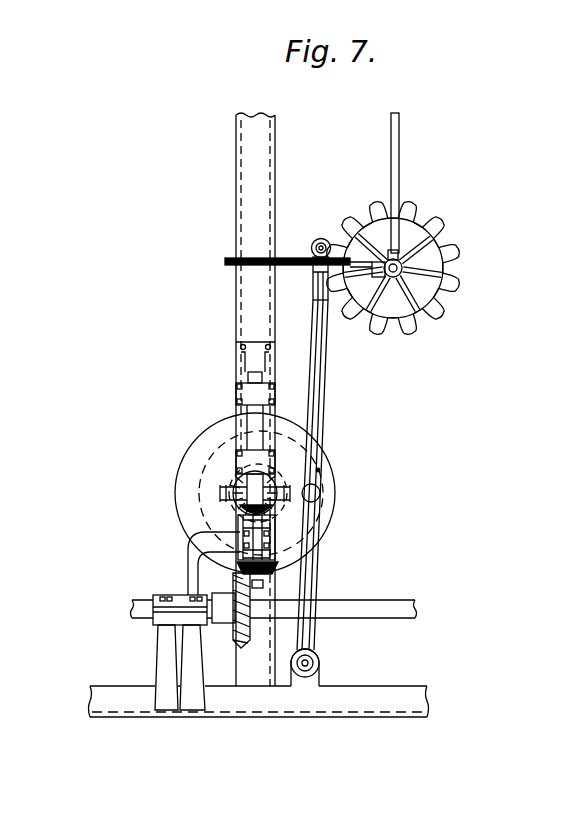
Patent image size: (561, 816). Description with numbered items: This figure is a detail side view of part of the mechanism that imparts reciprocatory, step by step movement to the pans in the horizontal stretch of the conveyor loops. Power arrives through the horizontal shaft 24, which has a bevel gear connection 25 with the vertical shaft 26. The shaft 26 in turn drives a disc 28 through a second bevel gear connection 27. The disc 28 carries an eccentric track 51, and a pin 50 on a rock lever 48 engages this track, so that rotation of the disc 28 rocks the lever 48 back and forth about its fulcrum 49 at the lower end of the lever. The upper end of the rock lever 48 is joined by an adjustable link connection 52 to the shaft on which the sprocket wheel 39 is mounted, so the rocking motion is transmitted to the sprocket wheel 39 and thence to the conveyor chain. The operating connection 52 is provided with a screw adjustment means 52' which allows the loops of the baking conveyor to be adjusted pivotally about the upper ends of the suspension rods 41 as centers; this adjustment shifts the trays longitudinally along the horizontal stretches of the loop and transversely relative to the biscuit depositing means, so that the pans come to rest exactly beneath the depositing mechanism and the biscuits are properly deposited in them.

The horizontal shaft 24 is at (372, 600).
The bevel gear connection 25 is at (236, 577).
The shaft 26 is at (270, 483).
The bevel gear connection 27 is at (238, 509).
The disc 28 is at (332, 514).
The sprocket wheel 39 is at (456, 246).
The suspension rods 41 is at (399, 152).
The rock lever 48 is at (326, 388).
The fulcrum 49 is at (320, 660).
The pin 50 is at (318, 492).
The eccentric track 51 is at (320, 470).
The adjustable link connection 52 is at (340, 241).
The screw adjustment means 52' is at (305, 229).